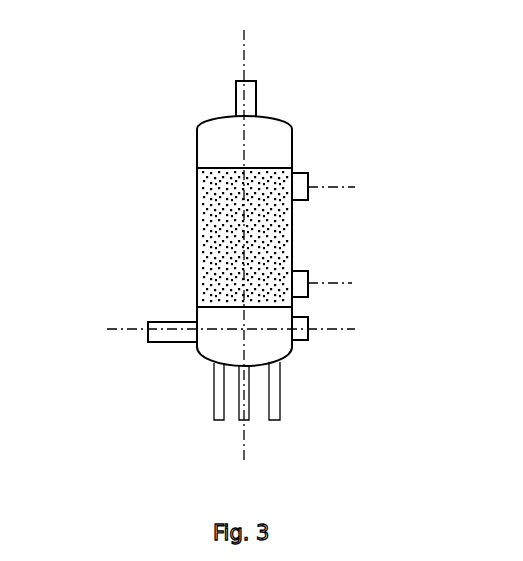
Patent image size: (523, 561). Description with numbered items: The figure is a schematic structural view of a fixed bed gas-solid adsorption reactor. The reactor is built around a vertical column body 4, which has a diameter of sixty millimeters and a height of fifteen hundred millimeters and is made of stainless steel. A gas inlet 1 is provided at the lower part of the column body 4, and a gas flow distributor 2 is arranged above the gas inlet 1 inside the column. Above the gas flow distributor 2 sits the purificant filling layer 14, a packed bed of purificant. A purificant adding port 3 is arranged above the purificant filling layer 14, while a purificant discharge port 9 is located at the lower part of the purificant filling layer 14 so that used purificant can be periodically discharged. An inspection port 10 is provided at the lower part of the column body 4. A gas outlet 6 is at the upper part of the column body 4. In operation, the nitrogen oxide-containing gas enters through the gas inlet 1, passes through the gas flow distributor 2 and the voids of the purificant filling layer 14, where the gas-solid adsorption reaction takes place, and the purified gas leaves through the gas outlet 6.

The gas inlet 1 is at (155, 325).
The gas flow distributor 2 is at (223, 307).
The purificant adding port 3 is at (308, 183).
The column body 4 is at (195, 157).
The gas outlet 6 is at (241, 99).
The purificant discharge port 9 is at (308, 282).
The inspection port 10 is at (308, 327).
The purificant filling layer 14 is at (207, 245).